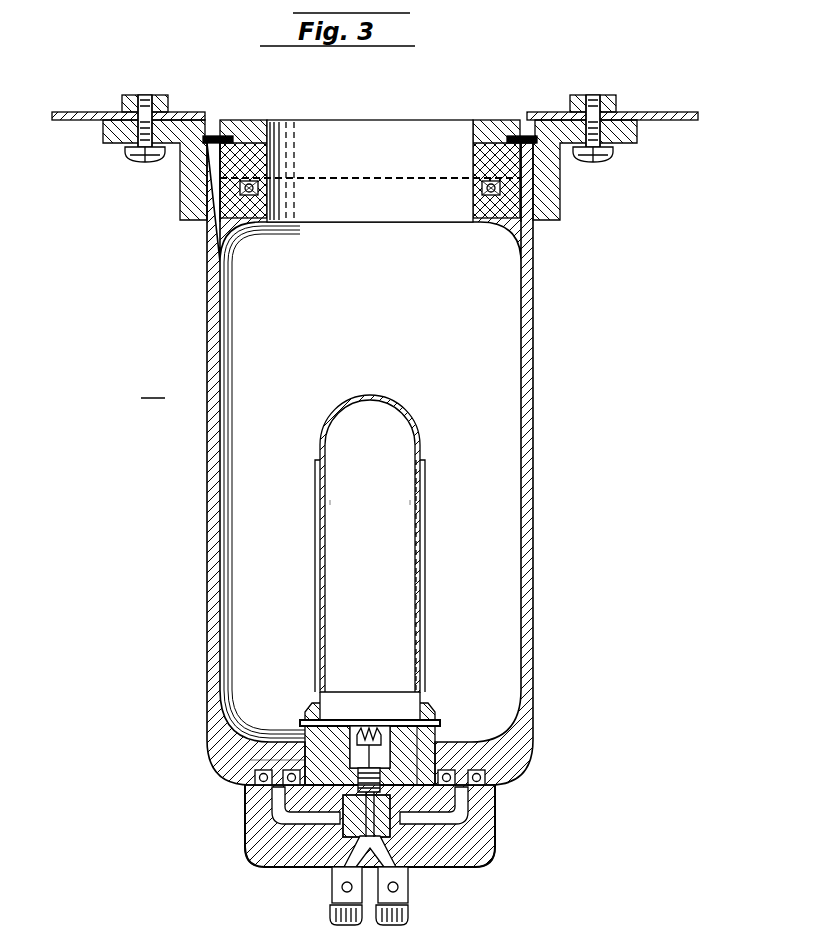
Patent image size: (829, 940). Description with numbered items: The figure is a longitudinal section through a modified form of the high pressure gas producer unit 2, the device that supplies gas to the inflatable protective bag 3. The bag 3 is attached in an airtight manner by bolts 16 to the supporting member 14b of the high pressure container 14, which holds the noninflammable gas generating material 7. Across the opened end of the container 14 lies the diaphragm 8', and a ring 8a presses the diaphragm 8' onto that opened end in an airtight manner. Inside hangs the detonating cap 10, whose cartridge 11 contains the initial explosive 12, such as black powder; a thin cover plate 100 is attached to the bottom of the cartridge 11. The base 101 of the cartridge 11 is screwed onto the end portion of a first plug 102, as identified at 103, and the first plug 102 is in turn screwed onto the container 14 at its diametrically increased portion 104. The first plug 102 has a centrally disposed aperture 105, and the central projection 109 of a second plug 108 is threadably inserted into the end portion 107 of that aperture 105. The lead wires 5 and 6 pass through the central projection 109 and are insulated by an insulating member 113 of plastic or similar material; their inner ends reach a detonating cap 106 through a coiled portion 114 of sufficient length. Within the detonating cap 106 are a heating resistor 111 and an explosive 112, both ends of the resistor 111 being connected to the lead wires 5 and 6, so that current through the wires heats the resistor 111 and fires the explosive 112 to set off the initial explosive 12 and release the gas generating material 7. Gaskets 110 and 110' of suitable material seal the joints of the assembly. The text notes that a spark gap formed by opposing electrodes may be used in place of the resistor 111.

The high pressure gas producer unit 2 is at (153, 384).
The inflatable protective bag 3 is at (73, 121).
The lead wire 5 is at (330, 852).
The lead wire 6 is at (412, 862).
The gas generating material 7 is at (245, 303).
The diaphragm 8' is at (370, 153).
The ring 8a is at (257, 124).
The detonating cap 10 is at (313, 452).
The cartridge 11 is at (417, 488).
The initial explosive 12 is at (333, 506).
The high pressure container 14 is at (537, 398).
The supporting member 14b is at (186, 177).
The bolt 16 is at (132, 152).
The thin cover plate 100 is at (385, 733).
The base of the cartridge 101 is at (417, 703).
The first plug 102 is at (440, 745).
The screw connection 103 is at (430, 720).
The diametrically increased portion 104 is at (478, 764).
The central aperture 105 is at (290, 812).
The detonating cap 106 is at (317, 720).
The end portion of the central aperture 107 is at (330, 852).
The second plug 108 is at (485, 822).
The central projection 109 is at (483, 862).
The gasket 110 is at (367, 501).
The gasket 110' is at (558, 203).
The heating resistor 111 is at (362, 724).
The explosive 112 is at (310, 720).
The insulating member 113 is at (440, 860).
The coiled portion 114 is at (300, 848).